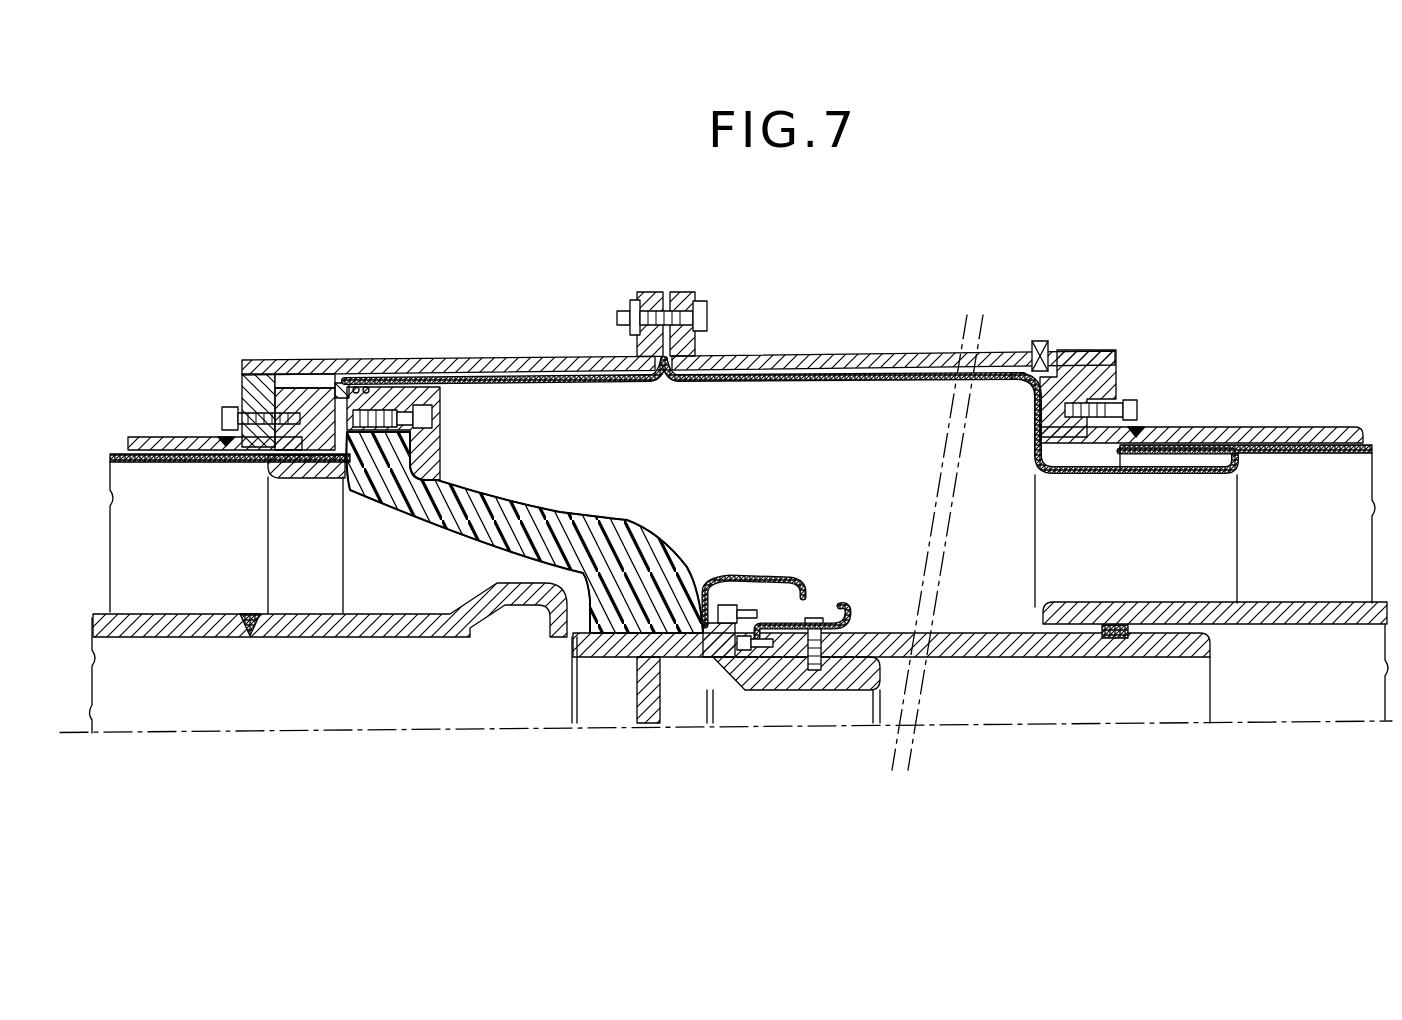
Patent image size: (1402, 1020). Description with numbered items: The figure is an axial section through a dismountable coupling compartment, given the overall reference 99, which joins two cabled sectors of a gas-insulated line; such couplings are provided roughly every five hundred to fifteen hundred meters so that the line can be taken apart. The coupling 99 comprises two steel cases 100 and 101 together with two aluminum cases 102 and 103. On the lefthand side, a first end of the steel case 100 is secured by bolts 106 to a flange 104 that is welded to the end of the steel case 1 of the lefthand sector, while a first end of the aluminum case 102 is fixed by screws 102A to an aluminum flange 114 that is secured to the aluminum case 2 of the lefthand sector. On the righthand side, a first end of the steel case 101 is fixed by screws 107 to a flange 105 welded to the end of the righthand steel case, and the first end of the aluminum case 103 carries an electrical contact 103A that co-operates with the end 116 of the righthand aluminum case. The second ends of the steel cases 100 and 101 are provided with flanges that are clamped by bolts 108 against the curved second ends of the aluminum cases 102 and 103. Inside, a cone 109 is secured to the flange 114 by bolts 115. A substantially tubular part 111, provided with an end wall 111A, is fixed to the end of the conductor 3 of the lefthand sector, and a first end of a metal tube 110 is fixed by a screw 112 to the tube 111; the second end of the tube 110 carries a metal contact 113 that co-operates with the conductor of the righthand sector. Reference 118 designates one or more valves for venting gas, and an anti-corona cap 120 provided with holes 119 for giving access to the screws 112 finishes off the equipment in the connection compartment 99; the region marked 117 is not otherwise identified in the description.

The coupling 99 is at (712, 285).
The steel case of the lefthand sector 1 is at (213, 441).
The aluminum case of the lefthand sector 2 is at (160, 463).
The conductor of the lefthand sector 3 is at (338, 622).
The steel case 100 is at (400, 365).
The steel case 101 is at (830, 363).
The aluminum case 102 is at (547, 385).
The screws 102A is at (340, 392).
The aluminum case 103 is at (782, 384).
The electrical contact 103A is at (1170, 521).
The flange 104 is at (297, 403).
The flange 105 is at (1075, 393).
The bolts 106 is at (225, 410).
The screws 107 is at (1115, 409).
The bolts 108 is at (710, 318).
The cone 109 is at (568, 522).
The metal tube 110 is at (1003, 690).
The tubular part 111 is at (833, 712).
The end wall 111A is at (630, 705).
The screw 112 is at (830, 636).
The metal contact 113 is at (1113, 640).
The flange 114 is at (345, 457).
The bolts 115 is at (433, 416).
The end of the case 116 is at (1118, 521).
The chamber 117 is at (875, 443).
The valves 118 is at (1018, 297).
The holes 119 is at (830, 610).
The anti-corona cap 120 is at (745, 578).